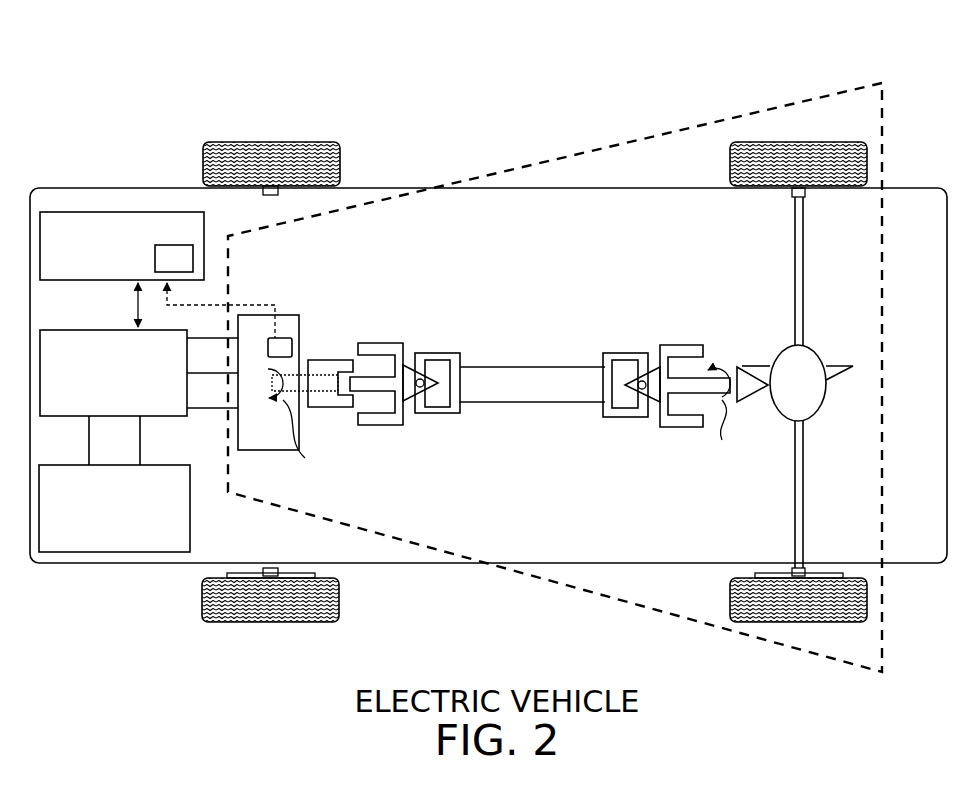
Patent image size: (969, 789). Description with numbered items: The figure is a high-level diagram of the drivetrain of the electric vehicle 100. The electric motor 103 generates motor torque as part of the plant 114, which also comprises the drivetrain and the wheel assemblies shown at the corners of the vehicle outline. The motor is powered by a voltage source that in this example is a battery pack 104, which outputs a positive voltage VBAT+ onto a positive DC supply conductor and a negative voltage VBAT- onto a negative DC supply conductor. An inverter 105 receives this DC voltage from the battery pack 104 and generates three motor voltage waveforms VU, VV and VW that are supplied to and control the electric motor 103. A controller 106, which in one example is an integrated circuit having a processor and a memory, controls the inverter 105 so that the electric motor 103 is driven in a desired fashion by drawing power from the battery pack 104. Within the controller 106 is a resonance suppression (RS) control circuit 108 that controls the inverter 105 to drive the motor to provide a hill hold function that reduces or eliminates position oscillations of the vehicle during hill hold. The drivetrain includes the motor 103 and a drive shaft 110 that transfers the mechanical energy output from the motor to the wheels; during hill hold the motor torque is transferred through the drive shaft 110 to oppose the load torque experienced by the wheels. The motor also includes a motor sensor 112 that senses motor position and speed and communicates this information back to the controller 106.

The electric vehicle 100 is at (211, 67).
The plant 114 is at (668, 133).
The controller 106 is at (100, 273).
The resonance suppression (RS) control circuit 108 is at (193, 248).
The inverter 105 is at (94, 396).
The battery pack 104 is at (132, 540).
The electric motor 103 is at (300, 351).
The motor sensor 112 is at (292, 345).
The drive shaft 110 is at (531, 403).